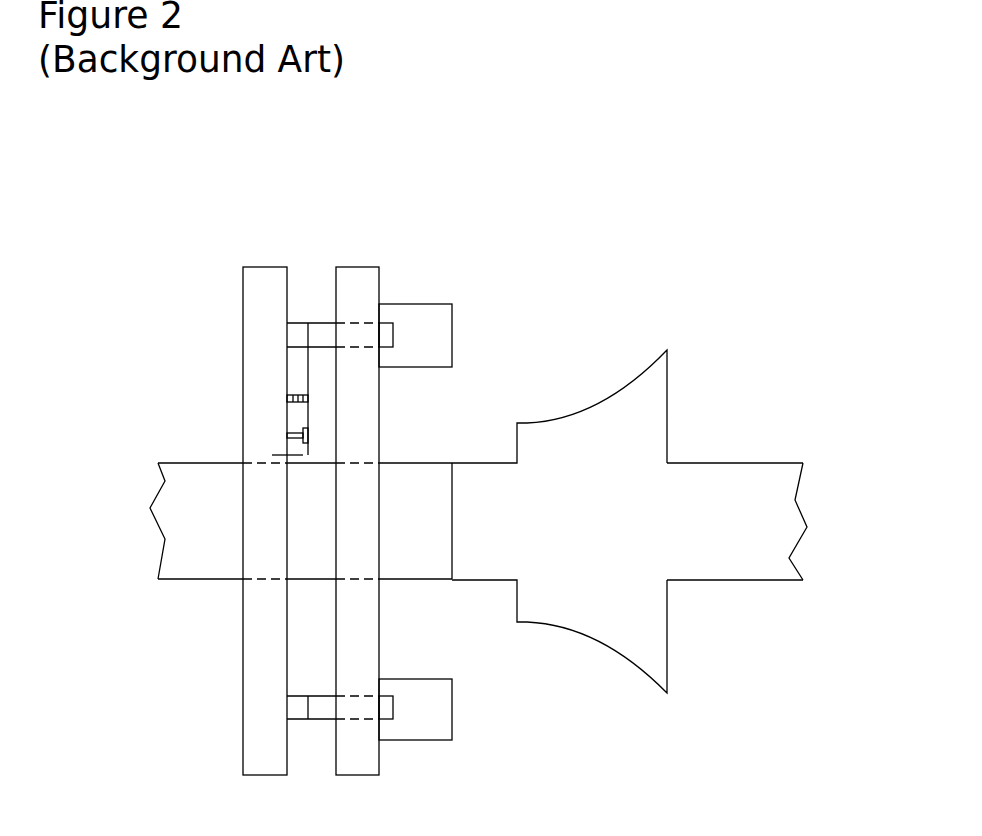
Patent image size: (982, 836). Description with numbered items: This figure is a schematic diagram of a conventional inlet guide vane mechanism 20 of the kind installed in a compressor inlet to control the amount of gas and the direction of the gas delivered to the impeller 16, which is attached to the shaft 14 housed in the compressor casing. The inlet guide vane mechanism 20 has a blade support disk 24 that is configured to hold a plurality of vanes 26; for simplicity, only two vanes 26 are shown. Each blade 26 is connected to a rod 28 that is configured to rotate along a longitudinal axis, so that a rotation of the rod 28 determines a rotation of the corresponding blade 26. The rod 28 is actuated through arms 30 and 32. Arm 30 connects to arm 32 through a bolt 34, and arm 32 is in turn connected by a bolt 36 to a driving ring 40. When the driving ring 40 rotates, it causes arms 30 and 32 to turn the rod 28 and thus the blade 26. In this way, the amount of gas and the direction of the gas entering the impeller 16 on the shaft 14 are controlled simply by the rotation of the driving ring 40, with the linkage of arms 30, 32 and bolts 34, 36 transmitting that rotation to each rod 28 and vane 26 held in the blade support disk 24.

The shaft 14 is at (742, 503).
The impeller 16 is at (638, 415).
The inlet guide vane mechanism 20 is at (256, 194).
The blade support disk 24 is at (380, 608).
The vane 26 is at (420, 315).
The rod 28 is at (353, 333).
The arm 30 is at (300, 362).
The arm 32 is at (297, 413).
The bolt 34 is at (288, 395).
The bolt 36 is at (288, 435).
The driving ring 40 is at (258, 713).